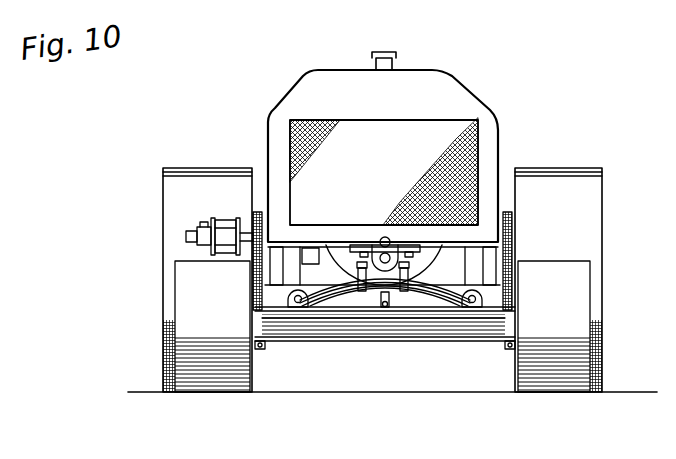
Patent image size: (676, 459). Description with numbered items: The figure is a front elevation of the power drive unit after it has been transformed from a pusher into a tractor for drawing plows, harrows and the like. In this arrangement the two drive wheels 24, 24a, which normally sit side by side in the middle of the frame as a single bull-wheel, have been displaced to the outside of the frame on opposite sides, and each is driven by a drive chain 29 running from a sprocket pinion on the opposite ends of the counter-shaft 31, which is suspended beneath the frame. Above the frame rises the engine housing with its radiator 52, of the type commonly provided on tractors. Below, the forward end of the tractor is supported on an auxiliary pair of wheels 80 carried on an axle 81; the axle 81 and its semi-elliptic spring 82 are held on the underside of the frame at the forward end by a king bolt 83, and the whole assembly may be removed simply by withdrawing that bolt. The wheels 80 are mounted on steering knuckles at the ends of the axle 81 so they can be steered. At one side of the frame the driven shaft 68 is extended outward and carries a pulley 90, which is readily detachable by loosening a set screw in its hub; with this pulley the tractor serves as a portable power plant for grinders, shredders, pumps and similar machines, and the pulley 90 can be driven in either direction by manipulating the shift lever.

The drive wheel 24 is at (203, 177).
The drive wheel 24a is at (567, 167).
The radiator 52 is at (488, 92).
The driven shaft 68 is at (186, 237).
The pulley 90 is at (229, 220).
The king bolt 83 is at (383, 238).
The counter-shaft 31 is at (460, 284).
The drive chain 29 is at (512, 260).
The auxiliary wheel 80 is at (575, 307).
The semi-elliptic spring 82 is at (335, 298).
The axle 81 is at (372, 328).